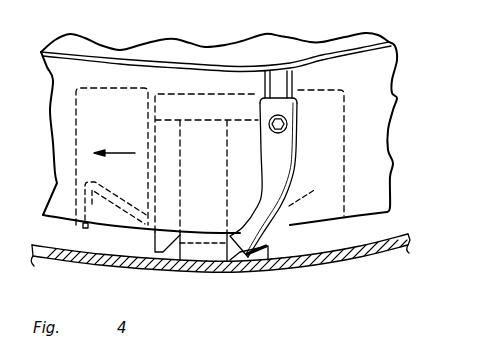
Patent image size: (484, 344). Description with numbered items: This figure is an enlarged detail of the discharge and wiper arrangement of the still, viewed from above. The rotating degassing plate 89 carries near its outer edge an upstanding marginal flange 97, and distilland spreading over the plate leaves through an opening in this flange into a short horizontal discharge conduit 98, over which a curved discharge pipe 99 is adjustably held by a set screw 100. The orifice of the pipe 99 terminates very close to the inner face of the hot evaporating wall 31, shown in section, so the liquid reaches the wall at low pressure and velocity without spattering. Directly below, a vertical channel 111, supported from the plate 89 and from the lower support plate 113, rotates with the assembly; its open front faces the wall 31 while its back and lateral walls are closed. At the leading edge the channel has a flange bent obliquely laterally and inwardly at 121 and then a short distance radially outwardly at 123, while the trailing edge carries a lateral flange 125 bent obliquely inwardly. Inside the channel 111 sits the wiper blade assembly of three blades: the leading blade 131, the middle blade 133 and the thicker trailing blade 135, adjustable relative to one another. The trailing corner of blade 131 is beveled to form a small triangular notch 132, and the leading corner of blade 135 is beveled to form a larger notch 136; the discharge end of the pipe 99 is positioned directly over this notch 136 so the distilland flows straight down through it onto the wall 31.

The hot evaporating wall 31 is at (392, 249).
The degassing plate 89 is at (386, 78).
The marginal flange 97 is at (178, 68).
The discharge conduit 98 is at (292, 81).
The discharge pipe 99 is at (258, 208).
The set screw 100 is at (278, 124).
The vertical channel 111 is at (147, 101).
The support plate 113 is at (346, 154).
The oblique leading flange 121 is at (128, 198).
The radial leading flange portion 123 is at (84, 193).
The trailing lateral flange 125 is at (304, 205).
The leading wiper blade 131 is at (155, 243).
The small triangular notch 132 is at (171, 252).
The middle wiper blade 133 is at (208, 249).
The trailing wiper blade 135 is at (269, 245).
The large triangular notch 136 is at (232, 250).